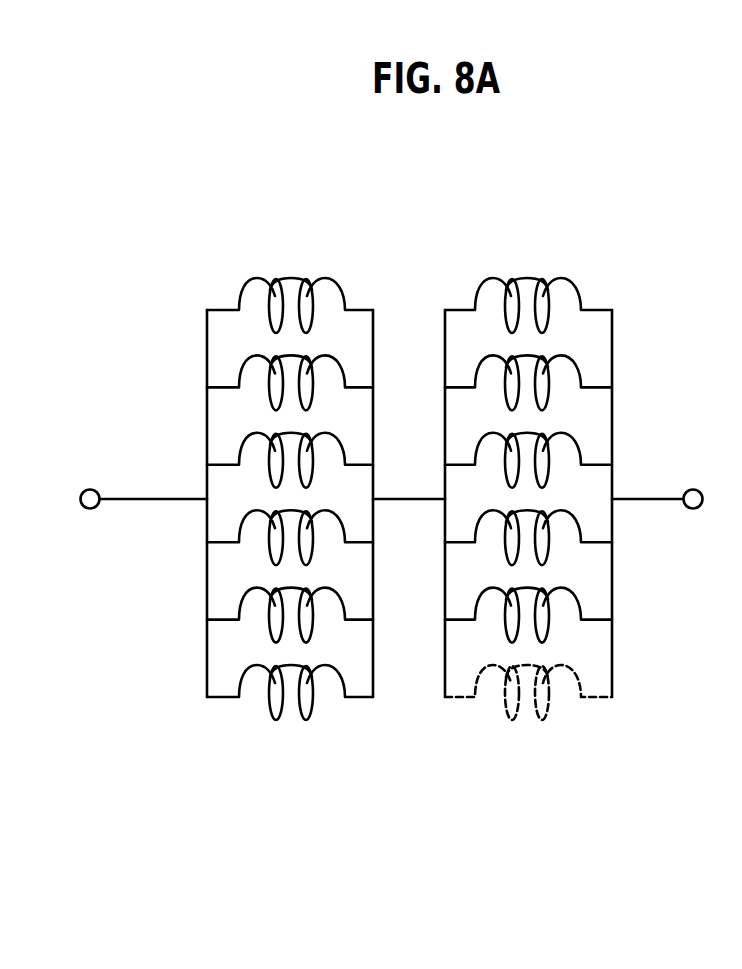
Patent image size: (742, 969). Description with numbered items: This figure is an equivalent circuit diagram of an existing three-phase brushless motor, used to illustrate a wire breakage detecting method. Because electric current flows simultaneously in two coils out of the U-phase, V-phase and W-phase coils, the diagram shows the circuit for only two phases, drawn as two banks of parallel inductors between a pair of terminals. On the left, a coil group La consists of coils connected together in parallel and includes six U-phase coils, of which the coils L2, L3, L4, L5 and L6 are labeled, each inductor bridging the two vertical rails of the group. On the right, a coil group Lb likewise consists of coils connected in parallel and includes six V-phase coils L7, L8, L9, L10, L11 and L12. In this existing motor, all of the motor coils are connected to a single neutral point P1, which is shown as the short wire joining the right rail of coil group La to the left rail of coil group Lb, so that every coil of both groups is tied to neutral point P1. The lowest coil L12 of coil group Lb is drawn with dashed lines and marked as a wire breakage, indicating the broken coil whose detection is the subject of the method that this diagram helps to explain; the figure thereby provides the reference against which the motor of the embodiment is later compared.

The U-phase coil L2 is at (290, 370).
The U-phase coil L3 is at (290, 448).
The U-phase coil L4 is at (290, 525).
The U-phase coil L5 is at (290, 603).
The U-phase coil L6 is at (290, 680).
The V-phase coil L7 is at (528, 291).
The V-phase coil L8 is at (528, 370).
The V-phase coil L9 is at (528, 448).
The V-phase coil L10 is at (528, 525).
The V-phase coil L11 is at (528, 603).
The V-phase coil L12 is at (528, 680).
The neutral point P1 is at (405, 497).
The coil group La is at (290, 591).
The coil group Lb is at (526, 575).